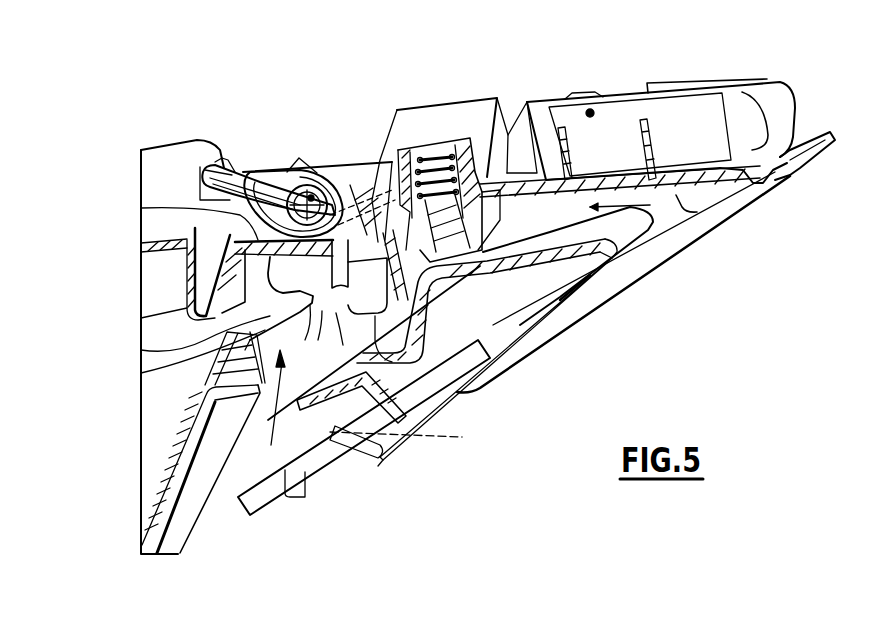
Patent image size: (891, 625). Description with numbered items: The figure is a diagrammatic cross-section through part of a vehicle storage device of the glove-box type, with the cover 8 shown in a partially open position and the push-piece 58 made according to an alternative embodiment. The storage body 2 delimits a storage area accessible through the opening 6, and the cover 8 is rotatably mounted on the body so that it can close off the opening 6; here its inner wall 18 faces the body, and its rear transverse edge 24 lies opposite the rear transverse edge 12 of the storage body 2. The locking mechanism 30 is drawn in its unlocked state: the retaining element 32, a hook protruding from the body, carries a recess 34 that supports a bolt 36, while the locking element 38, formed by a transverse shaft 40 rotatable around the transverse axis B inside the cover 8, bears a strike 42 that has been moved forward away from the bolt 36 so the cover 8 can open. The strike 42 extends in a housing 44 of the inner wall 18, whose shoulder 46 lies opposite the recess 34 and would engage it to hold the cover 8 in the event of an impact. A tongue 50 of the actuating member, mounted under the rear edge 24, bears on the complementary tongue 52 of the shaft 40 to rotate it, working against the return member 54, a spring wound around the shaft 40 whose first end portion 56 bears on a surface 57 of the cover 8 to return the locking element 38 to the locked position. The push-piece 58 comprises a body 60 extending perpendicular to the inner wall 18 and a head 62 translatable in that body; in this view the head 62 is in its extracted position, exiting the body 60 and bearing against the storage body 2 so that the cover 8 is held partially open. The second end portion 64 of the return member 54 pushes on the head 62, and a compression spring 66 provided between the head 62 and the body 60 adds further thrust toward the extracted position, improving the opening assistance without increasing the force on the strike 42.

The storage body 2 is at (165, 442).
The opening 6 is at (676, 200).
The cover 8 is at (443, 105).
The rear transverse edge 12 is at (613, 222).
The inner wall 18 is at (548, 178).
The rear transverse edge 24 is at (800, 170).
The locking mechanism 30 is at (250, 420).
The retaining element 32 is at (308, 435).
The recess 34 is at (320, 400).
The bolt 36 is at (380, 420).
The locking element 38 is at (300, 193).
The shaft 40 is at (290, 200).
The strike 42 is at (205, 350).
The housing 44 is at (480, 388).
The shoulder 46 is at (405, 345).
The tongue 50 is at (515, 130).
The complementary tongue 52 is at (365, 215).
The return member 54 is at (256, 238).
The first end portion 56 is at (222, 153).
The surface 57 is at (207, 172).
The push-piece 58 is at (490, 170).
The body 60 is at (475, 100).
The head 62 is at (480, 240).
The second end portion 64 is at (418, 155).
The compression spring 66 is at (437, 157).
The transverse axis B is at (310, 190).